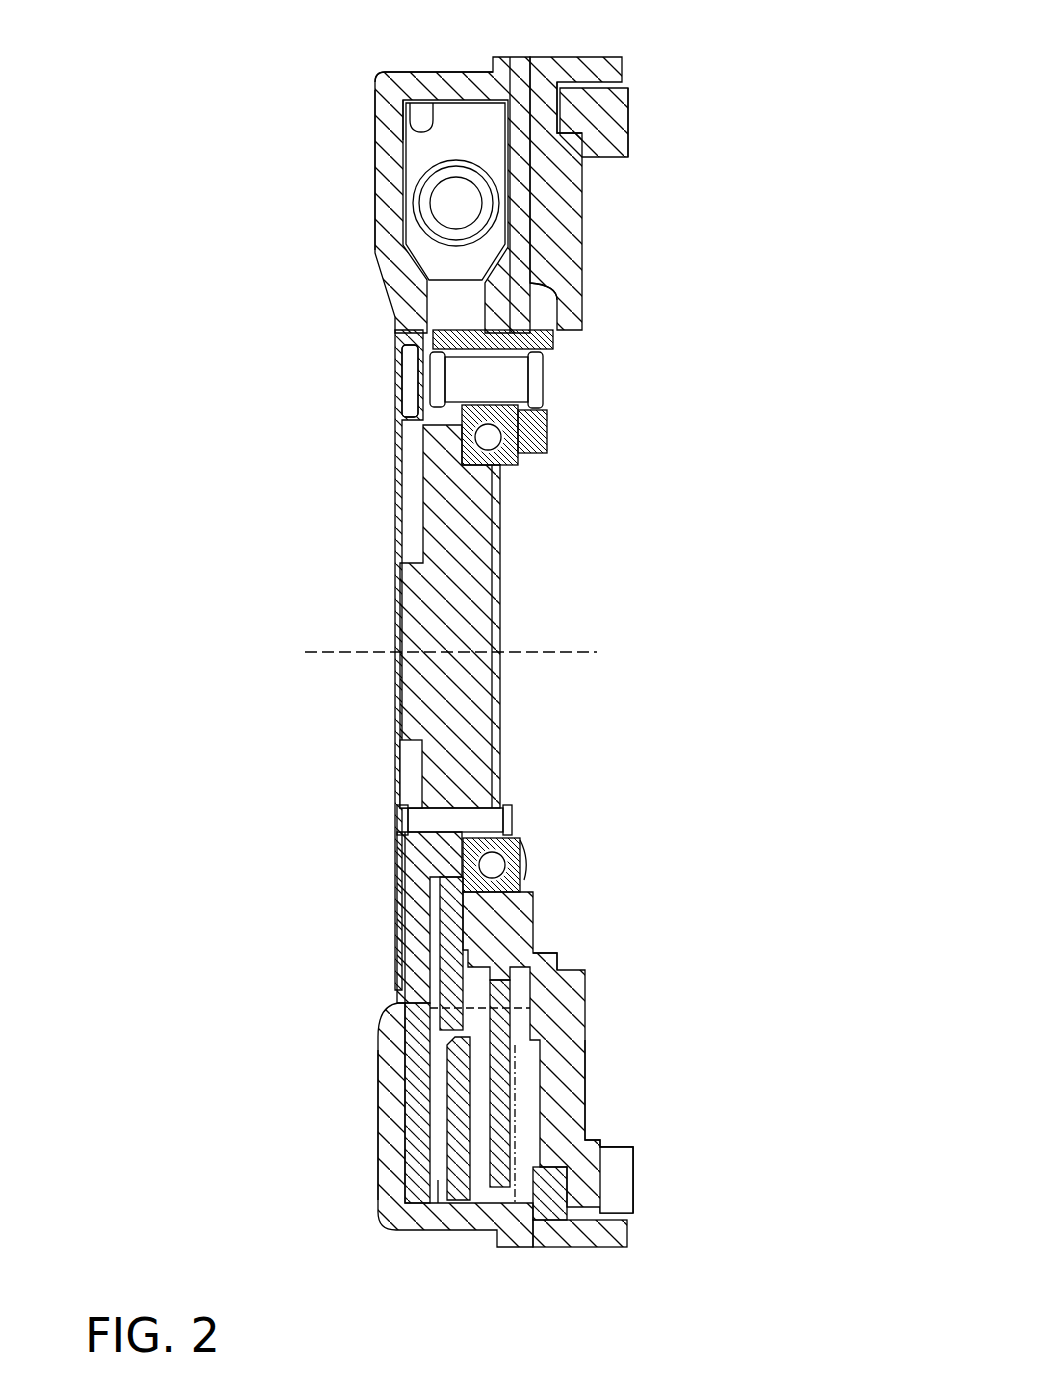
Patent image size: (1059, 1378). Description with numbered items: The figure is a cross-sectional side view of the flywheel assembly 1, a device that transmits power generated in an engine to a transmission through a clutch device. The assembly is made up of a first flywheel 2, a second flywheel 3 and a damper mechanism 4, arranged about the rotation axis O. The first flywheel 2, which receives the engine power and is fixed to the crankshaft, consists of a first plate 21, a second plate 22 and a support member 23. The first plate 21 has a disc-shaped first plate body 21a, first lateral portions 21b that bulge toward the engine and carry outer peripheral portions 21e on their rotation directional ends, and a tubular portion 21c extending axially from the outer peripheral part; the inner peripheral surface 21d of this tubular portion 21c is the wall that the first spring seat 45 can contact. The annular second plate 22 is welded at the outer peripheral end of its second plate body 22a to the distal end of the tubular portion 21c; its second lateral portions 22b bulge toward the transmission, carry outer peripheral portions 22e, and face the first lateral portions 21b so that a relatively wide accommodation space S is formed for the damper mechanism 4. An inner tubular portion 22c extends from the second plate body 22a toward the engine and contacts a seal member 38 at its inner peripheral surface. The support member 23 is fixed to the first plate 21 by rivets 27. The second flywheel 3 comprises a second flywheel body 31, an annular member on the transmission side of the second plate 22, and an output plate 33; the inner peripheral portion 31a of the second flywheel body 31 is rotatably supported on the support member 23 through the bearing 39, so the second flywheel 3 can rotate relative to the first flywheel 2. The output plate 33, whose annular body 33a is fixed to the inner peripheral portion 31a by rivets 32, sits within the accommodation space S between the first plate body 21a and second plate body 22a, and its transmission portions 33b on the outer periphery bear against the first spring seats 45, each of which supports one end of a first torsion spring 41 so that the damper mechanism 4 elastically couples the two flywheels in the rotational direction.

The flywheel assembly 1 is at (673, 82).
The first flywheel 2 is at (378, 86).
The second flywheel 3 is at (633, 103).
The damper mechanism 4 is at (399, 140).
The first plate 21 is at (374, 246).
The first plate body 21a is at (397, 982).
The first lateral portion 21b is at (387, 162).
The tubular portion 21c is at (433, 100).
The inner peripheral surface 21d is at (412, 110).
The outer peripheral portion 21e is at (433, 1148).
The second plate 22 is at (523, 200).
The second plate body 22a is at (557, 957).
The second lateral portion 22b is at (520, 168).
The inner tubular portion 22c is at (530, 293).
The outer peripheral portion 22e is at (503, 1095).
The support member 23 is at (438, 490).
The rivet 27 is at (480, 818).
The second flywheel body 31 is at (590, 1017).
The inner peripheral portion 31a is at (540, 402).
The rivet 32 is at (540, 378).
The output plate 33 is at (412, 335).
The body 33a is at (405, 385).
The transmission portion 33b is at (440, 1087).
The seal member 38 is at (553, 341).
The bearing 39 is at (545, 455).
The first torsion spring 41 is at (412, 198).
The first spring seat 45 is at (415, 220).
The accommodation space S is at (438, 1170).
The axis O is at (453, 656).